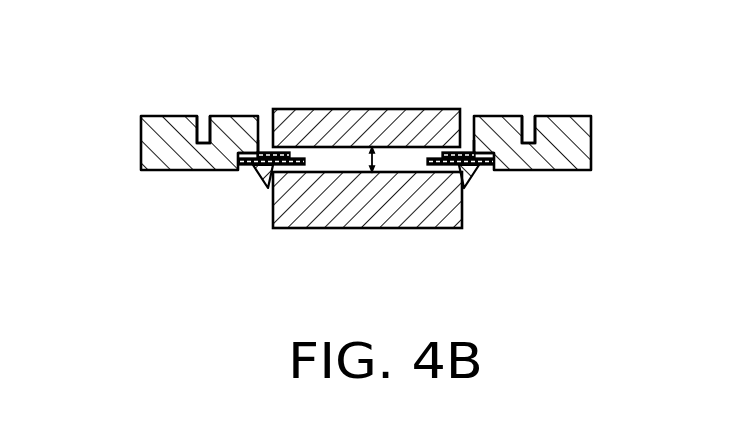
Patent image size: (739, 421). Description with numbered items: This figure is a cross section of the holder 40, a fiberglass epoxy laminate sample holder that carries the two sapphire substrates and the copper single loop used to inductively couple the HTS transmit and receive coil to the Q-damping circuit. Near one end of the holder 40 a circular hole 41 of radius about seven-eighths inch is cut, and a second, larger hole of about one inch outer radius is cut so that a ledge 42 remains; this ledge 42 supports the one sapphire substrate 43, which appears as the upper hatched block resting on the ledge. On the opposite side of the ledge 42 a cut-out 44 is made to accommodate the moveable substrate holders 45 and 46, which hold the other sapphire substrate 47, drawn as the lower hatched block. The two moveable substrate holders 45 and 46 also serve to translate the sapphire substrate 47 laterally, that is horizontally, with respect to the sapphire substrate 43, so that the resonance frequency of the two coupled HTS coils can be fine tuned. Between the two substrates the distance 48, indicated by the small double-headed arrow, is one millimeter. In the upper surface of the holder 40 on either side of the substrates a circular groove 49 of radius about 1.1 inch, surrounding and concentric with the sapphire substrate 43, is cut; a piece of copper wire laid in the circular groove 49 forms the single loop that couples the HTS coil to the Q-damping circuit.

The holder 40 is at (592, 135).
The circular hole 41 is at (322, 157).
The ledge 42 is at (268, 150).
The sapphire substrate 43 is at (387, 108).
The cut-out 44 is at (250, 178).
The moveable substrate holder 45 is at (258, 178).
The moveable substrate holder 46 is at (482, 173).
The sapphire substrate 47 is at (353, 222).
The distance 48 is at (368, 157).
The circular groove 49 is at (201, 116).